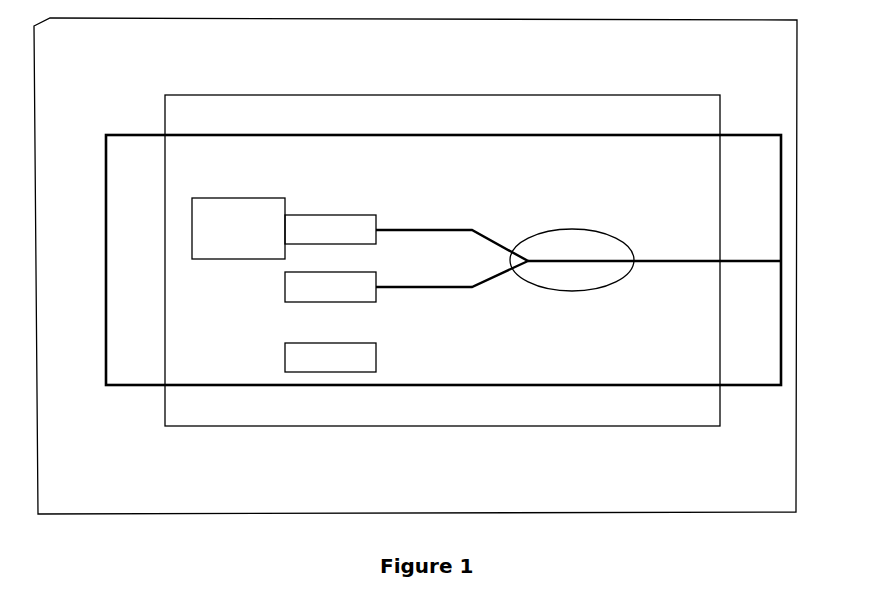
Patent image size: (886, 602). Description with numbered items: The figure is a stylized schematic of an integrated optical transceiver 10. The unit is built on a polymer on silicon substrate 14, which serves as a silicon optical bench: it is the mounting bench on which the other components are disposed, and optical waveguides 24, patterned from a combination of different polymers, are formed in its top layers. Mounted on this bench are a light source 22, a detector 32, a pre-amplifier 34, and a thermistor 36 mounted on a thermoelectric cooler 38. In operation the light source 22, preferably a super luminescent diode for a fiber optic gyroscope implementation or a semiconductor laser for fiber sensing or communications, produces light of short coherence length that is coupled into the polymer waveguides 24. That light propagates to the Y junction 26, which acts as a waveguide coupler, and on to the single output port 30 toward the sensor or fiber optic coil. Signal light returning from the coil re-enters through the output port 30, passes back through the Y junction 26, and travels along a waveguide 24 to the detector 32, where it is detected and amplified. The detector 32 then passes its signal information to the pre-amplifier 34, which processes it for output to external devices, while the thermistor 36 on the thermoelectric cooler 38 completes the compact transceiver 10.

The integrated optical transceiver 10 is at (514, 363).
The polymer on silicon substrate 14 is at (641, 346).
The light source 22 is at (295, 298).
The optical waveguides 24 is at (417, 301).
The Y junction 26 is at (553, 238).
The output port 30 is at (701, 249).
The detector 32 is at (359, 215).
The pre-amplifier 34 is at (211, 209).
The thermistor 36 is at (345, 375).
The thermoelectric cooler 38 is at (397, 413).